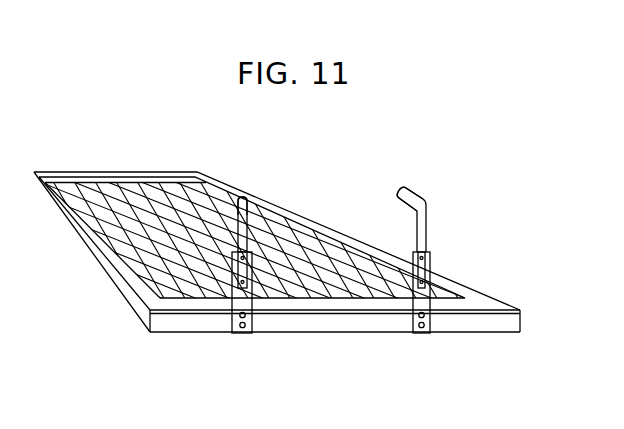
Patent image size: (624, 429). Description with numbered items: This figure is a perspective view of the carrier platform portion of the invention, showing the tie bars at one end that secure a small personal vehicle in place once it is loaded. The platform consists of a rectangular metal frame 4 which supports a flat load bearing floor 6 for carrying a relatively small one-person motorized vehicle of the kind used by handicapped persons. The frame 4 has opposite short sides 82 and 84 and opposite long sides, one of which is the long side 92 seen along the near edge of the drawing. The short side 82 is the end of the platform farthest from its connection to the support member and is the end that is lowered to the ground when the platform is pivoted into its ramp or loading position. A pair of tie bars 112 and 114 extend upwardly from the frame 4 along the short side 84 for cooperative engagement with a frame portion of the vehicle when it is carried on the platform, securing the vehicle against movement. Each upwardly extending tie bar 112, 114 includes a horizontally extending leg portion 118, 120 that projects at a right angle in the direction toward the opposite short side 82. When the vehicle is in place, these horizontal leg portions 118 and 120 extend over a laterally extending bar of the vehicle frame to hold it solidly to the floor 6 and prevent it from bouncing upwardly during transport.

The short side 82 is at (118, 170).
The flat load bearing floor 6 is at (151, 216).
The horizontally extending leg portion 118 is at (239, 192).
The tie bar 112 is at (250, 224).
The horizontally extending leg portion 120 is at (408, 190).
The tie bar 114 is at (428, 223).
The long side 92 is at (108, 270).
The rectangular metal frame 4 is at (186, 320).
The short side 84 is at (503, 320).